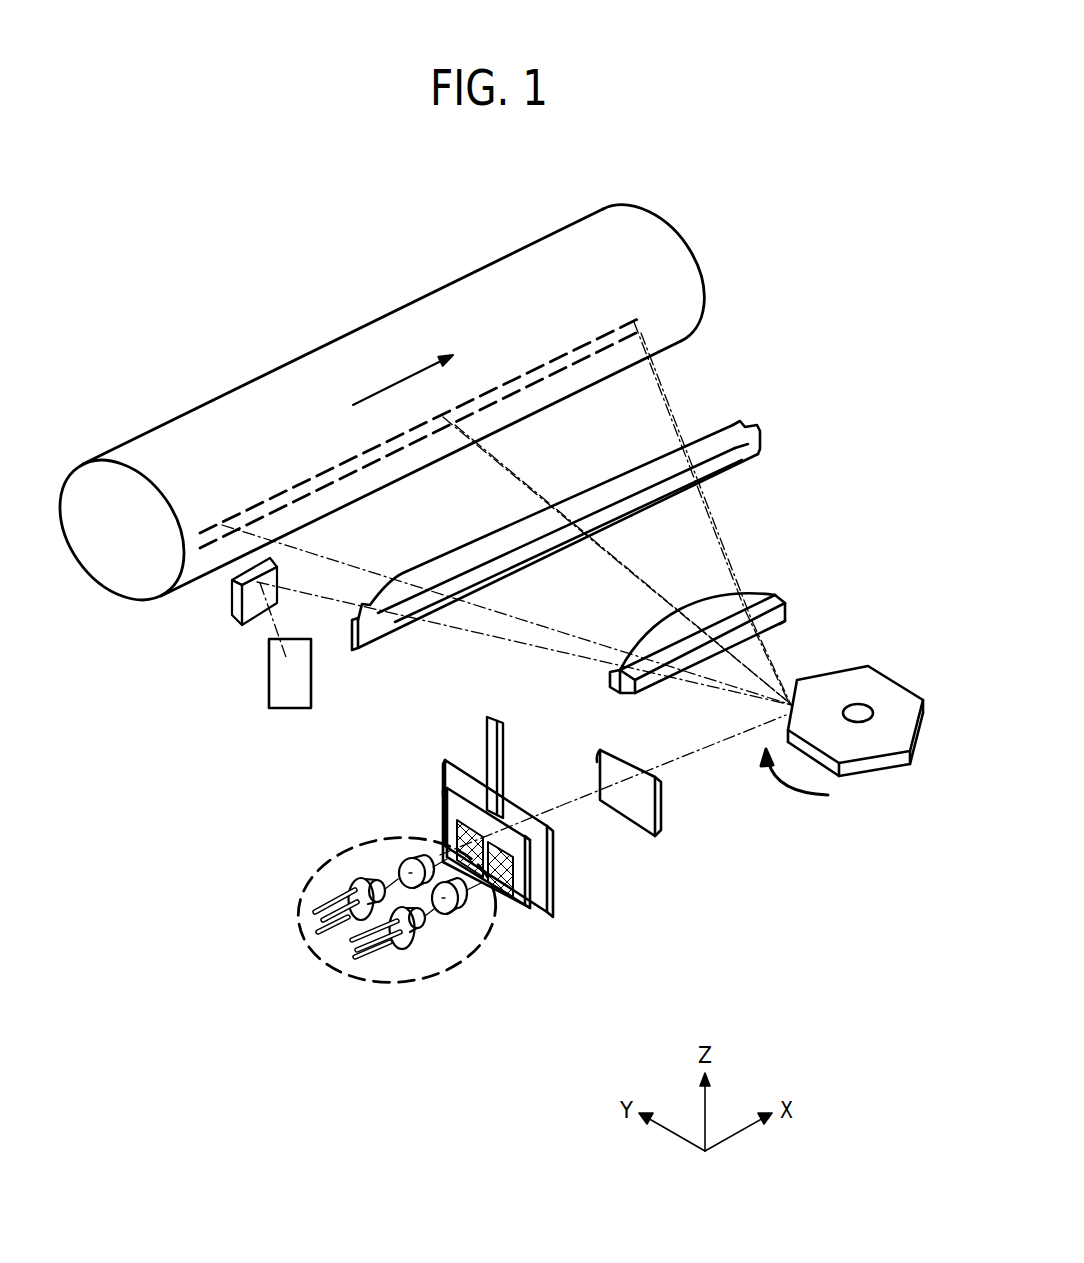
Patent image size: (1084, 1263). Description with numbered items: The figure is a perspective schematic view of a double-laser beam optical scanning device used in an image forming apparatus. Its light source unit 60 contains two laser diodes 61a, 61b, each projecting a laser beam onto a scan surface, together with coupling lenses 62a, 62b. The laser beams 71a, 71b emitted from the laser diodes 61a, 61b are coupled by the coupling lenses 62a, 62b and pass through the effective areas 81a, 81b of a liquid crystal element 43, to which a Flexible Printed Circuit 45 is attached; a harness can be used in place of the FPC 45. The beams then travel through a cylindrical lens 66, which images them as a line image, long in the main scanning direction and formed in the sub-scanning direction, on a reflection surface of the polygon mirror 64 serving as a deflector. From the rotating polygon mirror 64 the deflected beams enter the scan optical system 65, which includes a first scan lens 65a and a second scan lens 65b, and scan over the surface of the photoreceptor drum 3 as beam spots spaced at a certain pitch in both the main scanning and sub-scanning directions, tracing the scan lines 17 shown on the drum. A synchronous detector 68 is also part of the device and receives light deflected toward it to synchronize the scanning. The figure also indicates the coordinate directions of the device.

The photoreceptor drum 3 is at (192, 564).
The scan lines 17 is at (290, 488).
The liquid crystal element 43 is at (445, 784).
The Flexible Printed Circuit 45 is at (488, 733).
The light source unit 60 is at (407, 985).
The laser diode 61a is at (325, 928).
The laser diode 61b is at (375, 960).
The coupling lens 62a is at (399, 867).
The coupling lens 62b is at (458, 914).
The polygon mirror 64 is at (877, 693).
The scan optical system 65 is at (634, 557).
The first scan lens 65a is at (731, 607).
The second scan lens 65b is at (712, 438).
The cylindrical lens 66 is at (615, 767).
The synchronous detector 68 is at (278, 683).
The laser beam 71a is at (577, 797).
The laser beam 71b is at (577, 821).
The effective area 81a is at (480, 850).
The effective area 81b is at (502, 873).